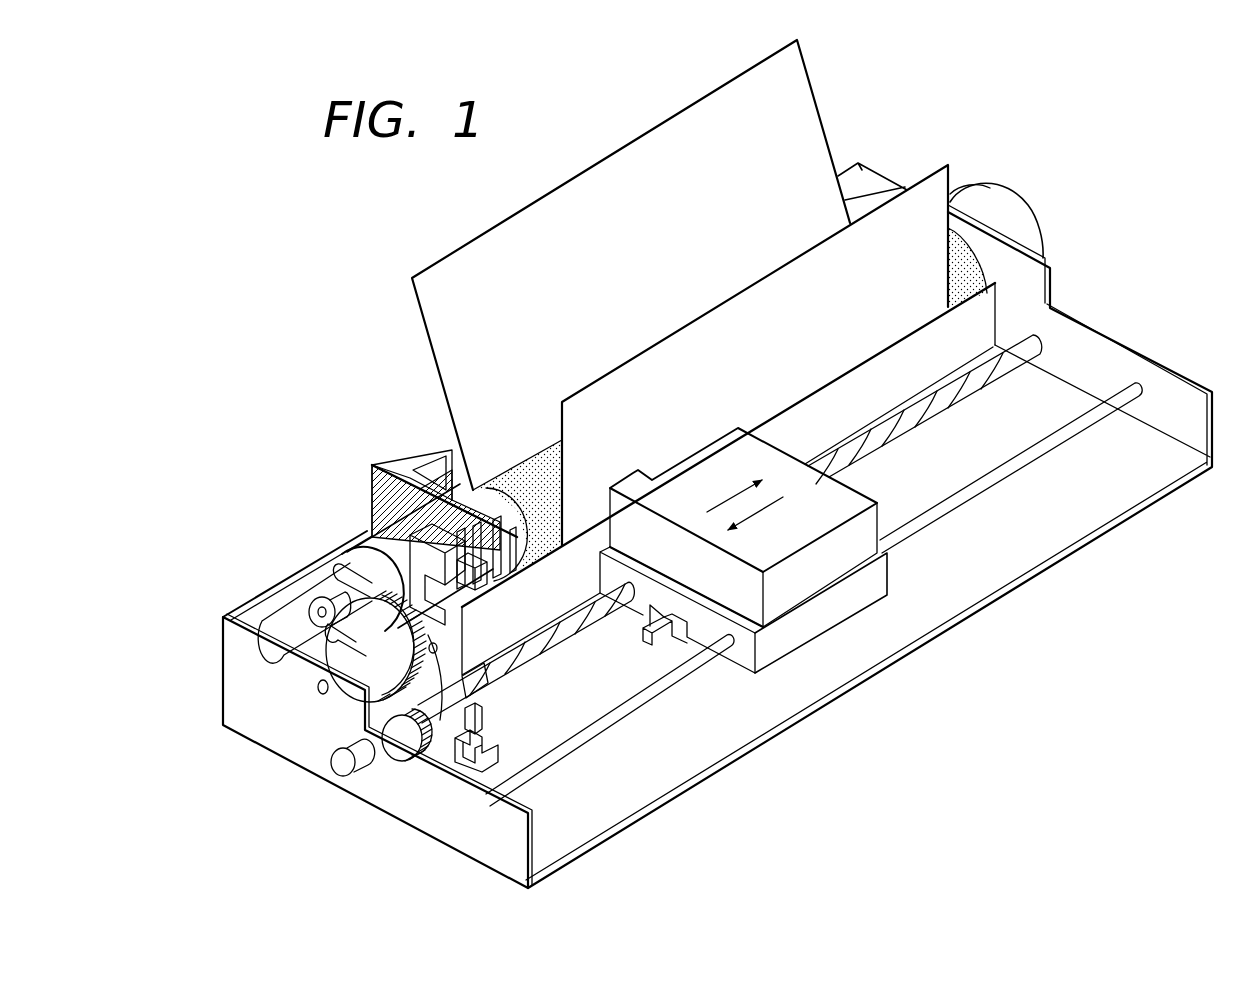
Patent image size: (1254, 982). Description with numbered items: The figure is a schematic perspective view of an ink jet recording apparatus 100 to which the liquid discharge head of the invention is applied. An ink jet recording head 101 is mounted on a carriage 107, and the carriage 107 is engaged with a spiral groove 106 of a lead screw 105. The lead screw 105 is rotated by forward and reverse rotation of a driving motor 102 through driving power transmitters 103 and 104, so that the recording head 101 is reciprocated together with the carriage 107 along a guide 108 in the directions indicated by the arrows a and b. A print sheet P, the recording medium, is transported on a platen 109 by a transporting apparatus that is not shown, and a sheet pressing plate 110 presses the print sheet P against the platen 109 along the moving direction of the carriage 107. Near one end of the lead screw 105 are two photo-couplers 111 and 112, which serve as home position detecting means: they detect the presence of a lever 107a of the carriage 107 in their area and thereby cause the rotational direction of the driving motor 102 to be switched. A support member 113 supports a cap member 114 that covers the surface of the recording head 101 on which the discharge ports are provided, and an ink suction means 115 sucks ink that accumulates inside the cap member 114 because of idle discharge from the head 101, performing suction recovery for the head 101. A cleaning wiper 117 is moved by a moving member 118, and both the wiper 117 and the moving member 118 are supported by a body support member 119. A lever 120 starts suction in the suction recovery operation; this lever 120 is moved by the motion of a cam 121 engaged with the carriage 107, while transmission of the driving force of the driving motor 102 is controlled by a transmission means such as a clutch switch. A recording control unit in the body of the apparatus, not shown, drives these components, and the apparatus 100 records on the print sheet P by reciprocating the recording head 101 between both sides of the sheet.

The ink jet recording apparatus 100 is at (900, 162).
The print sheet P is at (810, 118).
The ink jet recording head 101 is at (843, 497).
The driving motor 102 is at (353, 547).
The driving power transmitter 103 is at (342, 642).
The driving power transmitter 104 is at (400, 737).
The lead screw 105 is at (662, 630).
The spiral groove 106 is at (483, 573).
The carriage 107 is at (878, 575).
The lever 107a is at (737, 660).
The guide 108 is at (623, 712).
The platen 109 is at (967, 267).
The sheet pressing plate 110 is at (887, 348).
The photo-coupler 111 is at (483, 722).
The photo-coupler 112 is at (475, 770).
The support member 113 is at (427, 477).
The cap member 114 is at (585, 618).
The ink suction means 115 is at (370, 480).
The cleaning wiper 117 is at (490, 523).
The moving member 118 is at (370, 510).
The body support member 119 is at (385, 460).
The lever 120 is at (270, 605).
The cam 121 is at (442, 655).